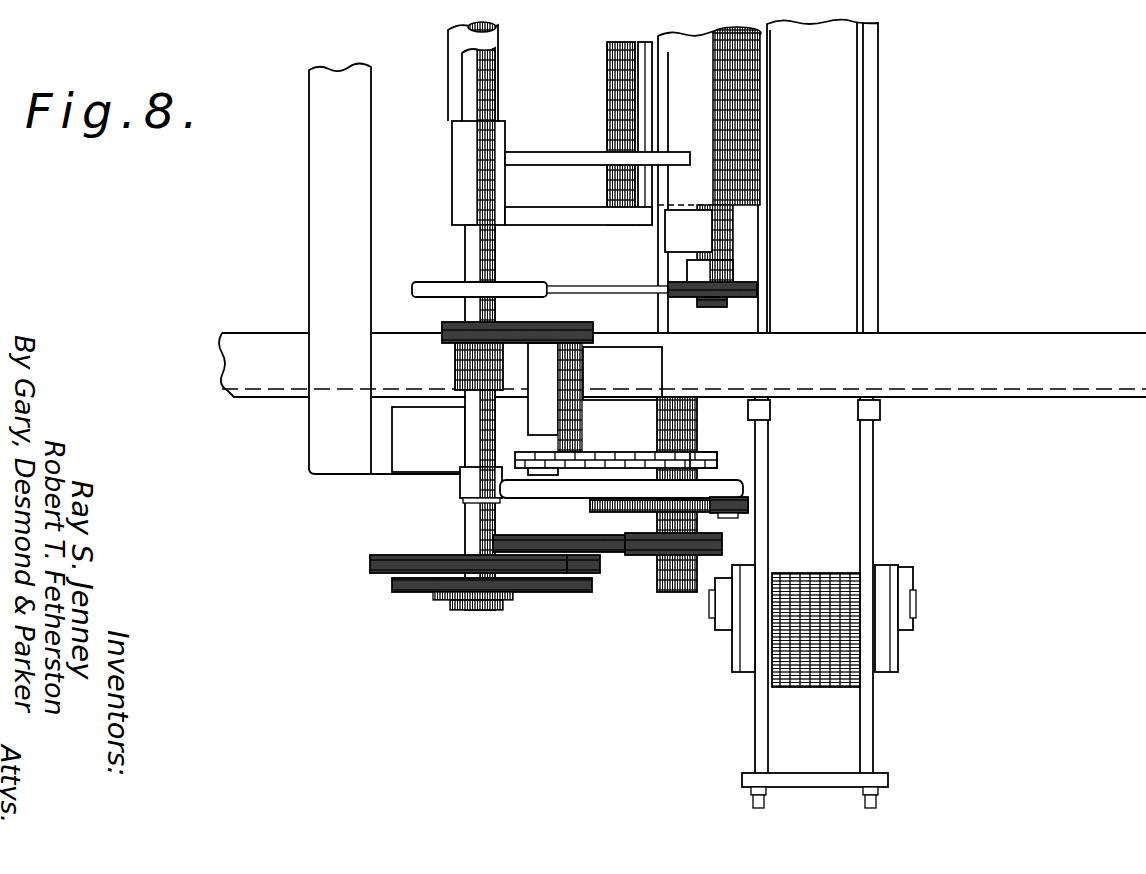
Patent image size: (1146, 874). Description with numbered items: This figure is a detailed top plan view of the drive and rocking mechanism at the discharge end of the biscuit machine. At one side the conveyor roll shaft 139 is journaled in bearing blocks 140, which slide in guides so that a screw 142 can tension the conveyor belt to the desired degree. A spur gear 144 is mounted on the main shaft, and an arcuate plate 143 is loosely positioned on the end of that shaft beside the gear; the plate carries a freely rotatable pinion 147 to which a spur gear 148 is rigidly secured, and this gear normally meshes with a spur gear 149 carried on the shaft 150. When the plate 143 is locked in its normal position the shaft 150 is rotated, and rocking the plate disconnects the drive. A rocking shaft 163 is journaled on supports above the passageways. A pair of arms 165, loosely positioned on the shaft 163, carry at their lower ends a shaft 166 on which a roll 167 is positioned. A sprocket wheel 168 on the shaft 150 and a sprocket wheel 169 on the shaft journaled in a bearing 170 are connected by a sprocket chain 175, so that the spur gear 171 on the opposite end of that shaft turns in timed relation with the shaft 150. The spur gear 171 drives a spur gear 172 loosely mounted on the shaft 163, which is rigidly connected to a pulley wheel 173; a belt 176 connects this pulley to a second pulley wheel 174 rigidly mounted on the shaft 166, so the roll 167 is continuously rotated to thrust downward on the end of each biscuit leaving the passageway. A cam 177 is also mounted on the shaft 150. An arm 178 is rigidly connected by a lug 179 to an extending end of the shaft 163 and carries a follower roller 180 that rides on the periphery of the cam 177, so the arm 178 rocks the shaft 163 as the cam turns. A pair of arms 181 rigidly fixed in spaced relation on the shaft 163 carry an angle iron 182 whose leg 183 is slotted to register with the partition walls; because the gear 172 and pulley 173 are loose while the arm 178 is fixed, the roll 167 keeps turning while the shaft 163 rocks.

The shaft 139 is at (916, 596).
The bearing blocks 140 is at (897, 568).
The screw 142 is at (877, 793).
The arcuate plate 143 is at (530, 594).
The spur gear 144 is at (412, 555).
The pinion 147 is at (608, 574).
The spur gear 148 is at (533, 535).
The spur gear 149 is at (655, 556).
The shaft 150 is at (680, 592).
The shaft 163 is at (472, 430).
The arms 165 is at (576, 126).
The shaft 166 is at (716, 300).
The roll 167 is at (752, 132).
The sprocket wheel 168 is at (725, 429).
The sprocket wheel 169 is at (530, 452).
The bearing 170 is at (580, 368).
The spur gear 171 is at (553, 322).
The spur gear 172 is at (455, 345).
The pulley wheel 173 is at (430, 280).
The pulley wheel 174 is at (682, 282).
The sprocket chain 175 is at (613, 452).
The belt 176 is at (660, 296).
The cam 177 is at (643, 507).
The arm 178 is at (583, 498).
The lug 179 is at (470, 478).
The follower roller 180 is at (745, 498).
The arms 181 is at (590, 190).
The angle iron 182 is at (632, 58).
The leg 183 is at (650, 47).